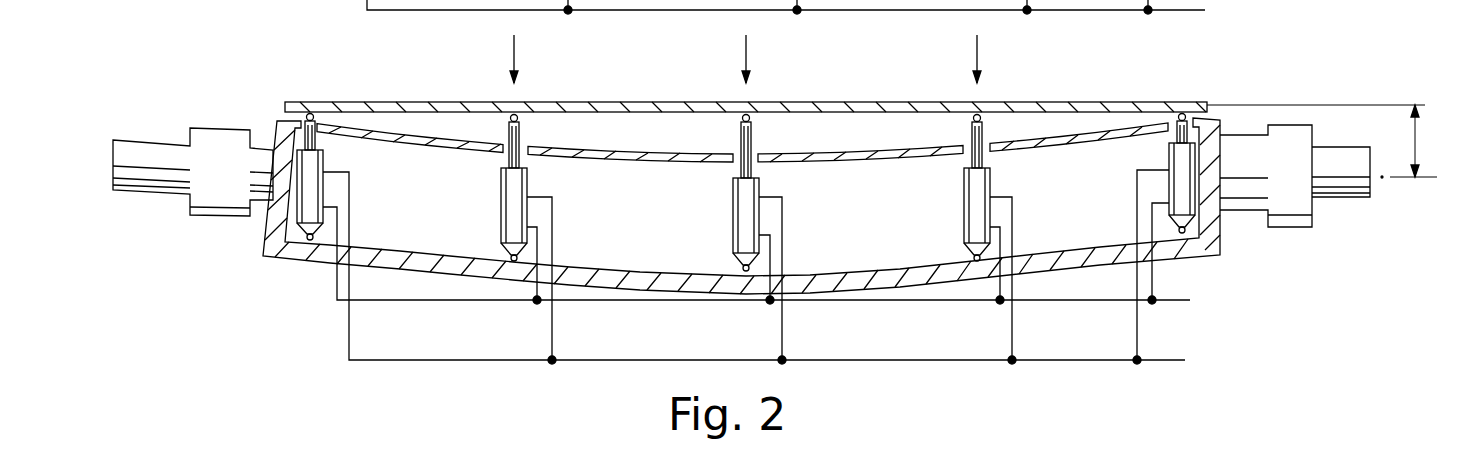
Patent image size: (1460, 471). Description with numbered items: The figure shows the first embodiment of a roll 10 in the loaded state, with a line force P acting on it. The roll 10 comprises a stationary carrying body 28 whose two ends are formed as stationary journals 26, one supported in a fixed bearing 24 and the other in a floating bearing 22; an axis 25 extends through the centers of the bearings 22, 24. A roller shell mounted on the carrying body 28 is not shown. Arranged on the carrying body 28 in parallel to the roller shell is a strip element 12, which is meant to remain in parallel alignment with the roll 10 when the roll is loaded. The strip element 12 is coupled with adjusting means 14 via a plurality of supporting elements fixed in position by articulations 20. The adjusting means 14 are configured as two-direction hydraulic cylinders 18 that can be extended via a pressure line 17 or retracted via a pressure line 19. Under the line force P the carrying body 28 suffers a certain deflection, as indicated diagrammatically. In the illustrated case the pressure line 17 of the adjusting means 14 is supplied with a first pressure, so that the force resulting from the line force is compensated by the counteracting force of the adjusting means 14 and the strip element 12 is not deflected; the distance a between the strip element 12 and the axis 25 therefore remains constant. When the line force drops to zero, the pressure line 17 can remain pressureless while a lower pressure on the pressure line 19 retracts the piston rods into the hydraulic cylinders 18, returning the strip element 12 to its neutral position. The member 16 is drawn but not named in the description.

The roll 10 is at (1143, 84).
The strip element 12 is at (618, 110).
The adjusting means 14 is at (563, 198).
The intermediate plate 16 is at (520, 138).
The pressure line 17 is at (845, 300).
The hydraulic cylinders 18 is at (503, 218).
The pressure line 19 is at (850, 12).
The articulations 20 is at (518, 110).
The floating bearing 22 is at (222, 148).
The fixed bearing 24 is at (1290, 135).
The axis 25 is at (1410, 180).
The stationary journals 26 is at (1345, 152).
The carrying body 28 is at (602, 275).